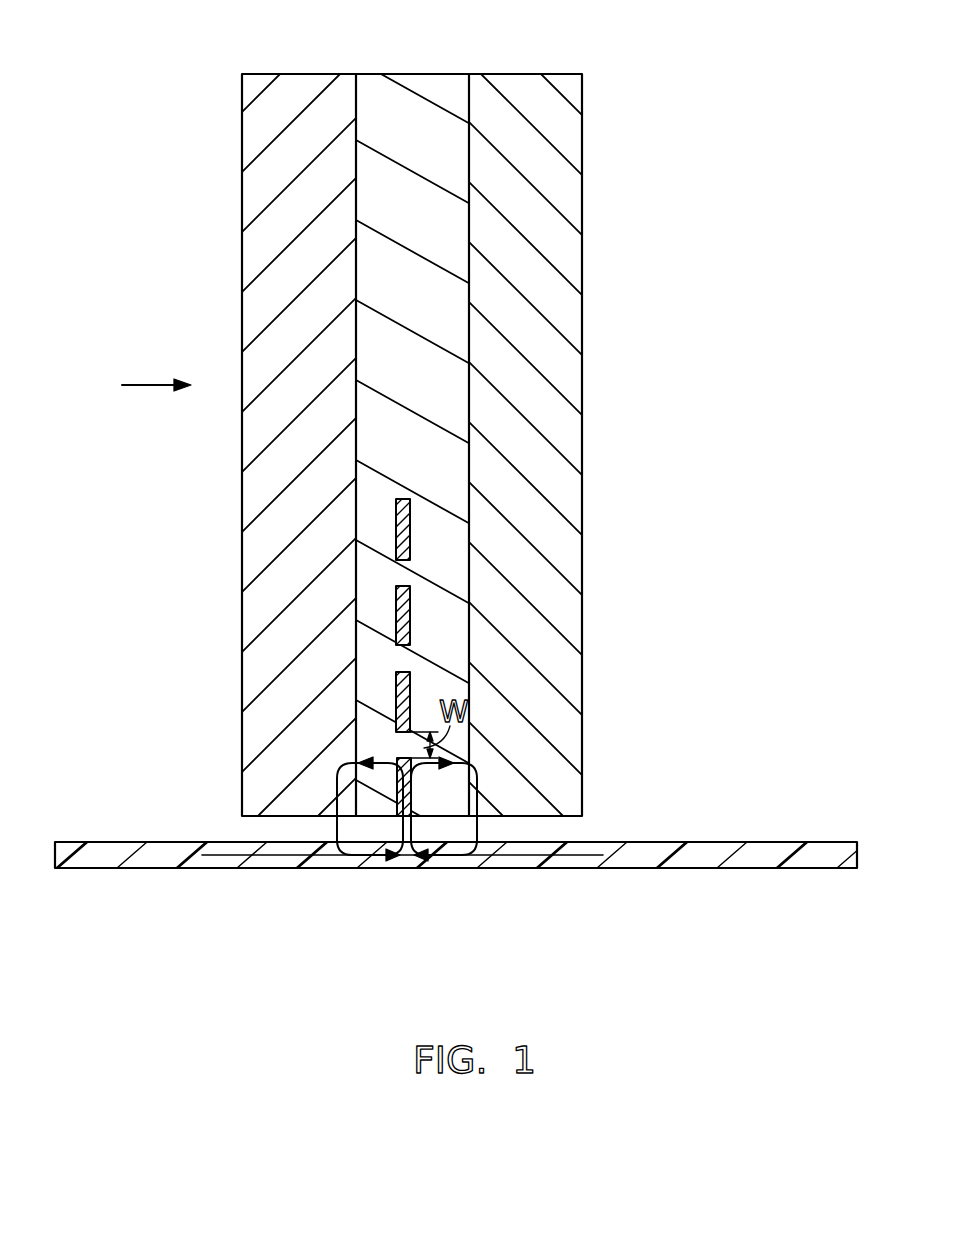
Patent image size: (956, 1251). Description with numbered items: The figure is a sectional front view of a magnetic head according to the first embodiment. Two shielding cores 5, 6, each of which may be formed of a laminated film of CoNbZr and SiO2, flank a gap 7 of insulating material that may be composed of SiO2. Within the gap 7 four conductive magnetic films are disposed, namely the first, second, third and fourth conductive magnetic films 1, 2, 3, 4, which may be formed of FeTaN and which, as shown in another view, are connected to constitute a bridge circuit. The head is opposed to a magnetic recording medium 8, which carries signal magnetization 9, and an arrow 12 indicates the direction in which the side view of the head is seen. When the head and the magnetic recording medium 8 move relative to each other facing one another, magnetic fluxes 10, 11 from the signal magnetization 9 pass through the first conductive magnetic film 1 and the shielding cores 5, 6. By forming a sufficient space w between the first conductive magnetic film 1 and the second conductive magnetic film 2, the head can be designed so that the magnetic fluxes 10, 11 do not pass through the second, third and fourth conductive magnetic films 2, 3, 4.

The first conductive magnetic film 1 is at (397, 760).
The second conductive magnetic film 2 is at (410, 688).
The third conductive magnetic film 3 is at (396, 622).
The fourth conductive magnetic film 4 is at (410, 532).
The shielding core 5 is at (547, 280).
The shielding core 6 is at (272, 280).
The gap 7 is at (408, 110).
The magnetic recording medium 8 is at (158, 853).
The signal magnetization 9 is at (273, 857).
The magnetic flux 10 is at (478, 803).
The magnetic flux 11 is at (337, 812).
The arrow 12 is at (152, 387).